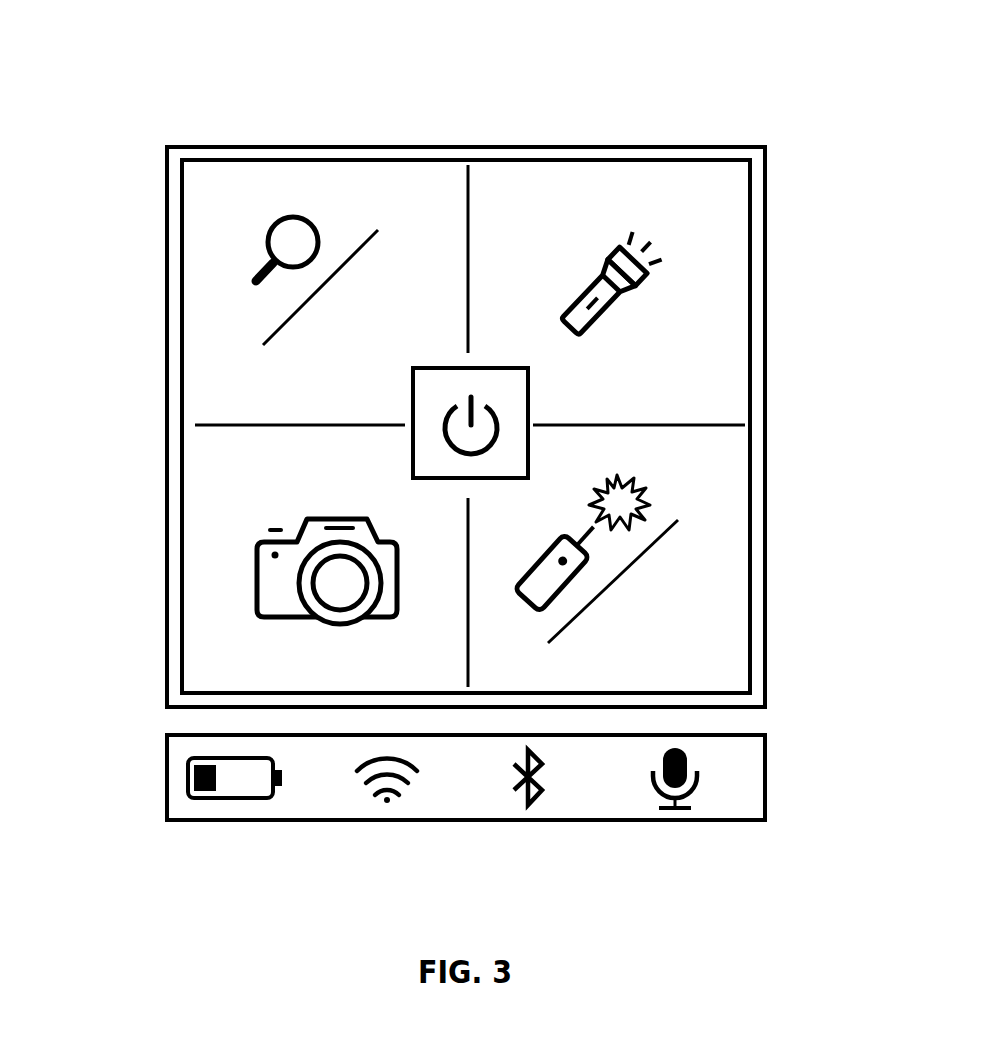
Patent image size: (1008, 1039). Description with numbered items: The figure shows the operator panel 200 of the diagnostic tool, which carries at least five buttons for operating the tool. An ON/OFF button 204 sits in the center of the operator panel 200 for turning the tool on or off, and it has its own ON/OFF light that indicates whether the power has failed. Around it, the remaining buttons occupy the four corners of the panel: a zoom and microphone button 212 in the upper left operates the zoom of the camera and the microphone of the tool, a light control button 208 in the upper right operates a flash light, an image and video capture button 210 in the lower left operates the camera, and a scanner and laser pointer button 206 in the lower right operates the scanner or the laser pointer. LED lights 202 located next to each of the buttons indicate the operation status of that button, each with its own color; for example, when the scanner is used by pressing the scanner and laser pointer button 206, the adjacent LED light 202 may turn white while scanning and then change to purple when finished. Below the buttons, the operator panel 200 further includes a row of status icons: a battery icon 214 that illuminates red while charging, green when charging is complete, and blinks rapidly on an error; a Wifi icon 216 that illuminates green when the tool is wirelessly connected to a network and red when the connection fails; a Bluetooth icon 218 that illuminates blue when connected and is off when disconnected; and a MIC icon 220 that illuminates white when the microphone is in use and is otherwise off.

The operator panel 200 is at (528, 92).
The LED lights 202 is at (287, 155).
The ON/OFF button 204 is at (508, 399).
The scanner and laser pointer button 206 is at (718, 512).
The light control button 208 is at (735, 213).
The image and video capture button 210 is at (205, 625).
The zoom and microphone button 212 is at (205, 345).
The battery icon 214 is at (243, 783).
The Wifi icon 216 is at (387, 802).
The Bluetooth icon 218 is at (528, 803).
The MIC icon 220 is at (675, 808).